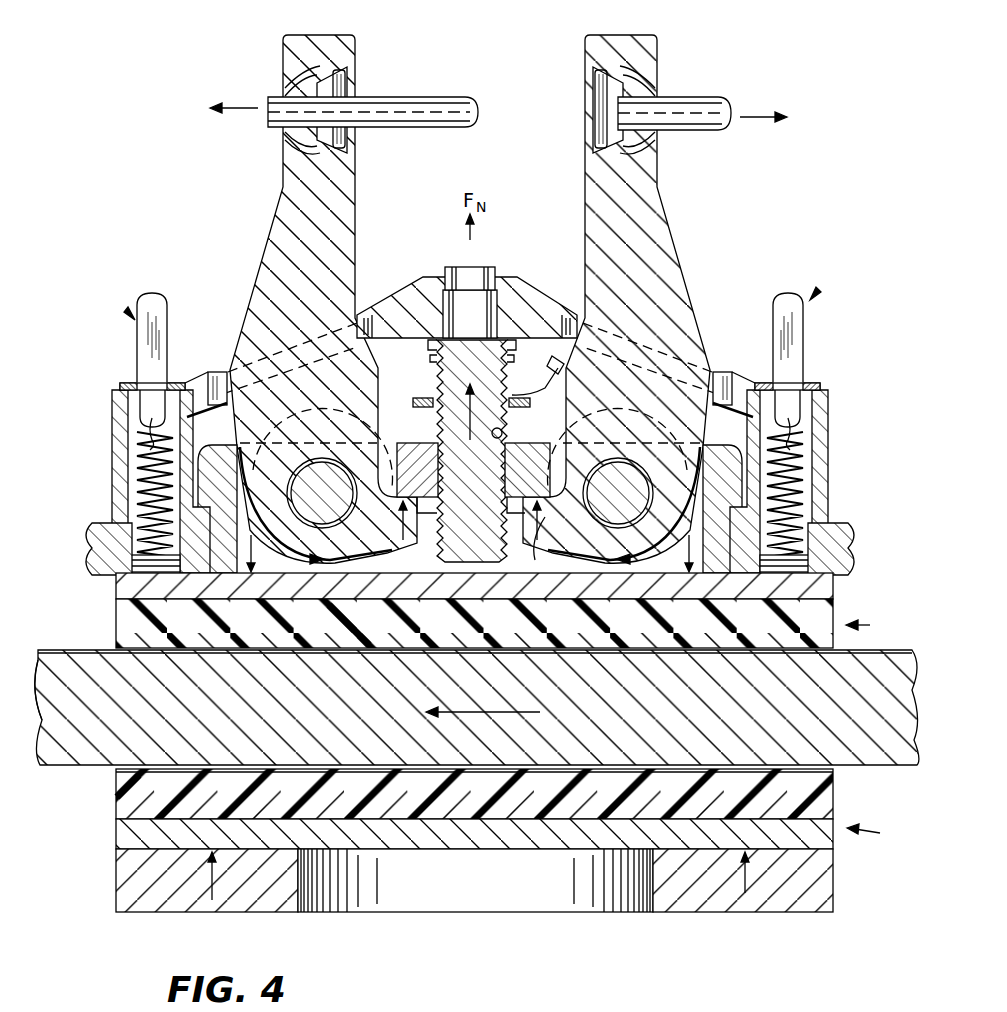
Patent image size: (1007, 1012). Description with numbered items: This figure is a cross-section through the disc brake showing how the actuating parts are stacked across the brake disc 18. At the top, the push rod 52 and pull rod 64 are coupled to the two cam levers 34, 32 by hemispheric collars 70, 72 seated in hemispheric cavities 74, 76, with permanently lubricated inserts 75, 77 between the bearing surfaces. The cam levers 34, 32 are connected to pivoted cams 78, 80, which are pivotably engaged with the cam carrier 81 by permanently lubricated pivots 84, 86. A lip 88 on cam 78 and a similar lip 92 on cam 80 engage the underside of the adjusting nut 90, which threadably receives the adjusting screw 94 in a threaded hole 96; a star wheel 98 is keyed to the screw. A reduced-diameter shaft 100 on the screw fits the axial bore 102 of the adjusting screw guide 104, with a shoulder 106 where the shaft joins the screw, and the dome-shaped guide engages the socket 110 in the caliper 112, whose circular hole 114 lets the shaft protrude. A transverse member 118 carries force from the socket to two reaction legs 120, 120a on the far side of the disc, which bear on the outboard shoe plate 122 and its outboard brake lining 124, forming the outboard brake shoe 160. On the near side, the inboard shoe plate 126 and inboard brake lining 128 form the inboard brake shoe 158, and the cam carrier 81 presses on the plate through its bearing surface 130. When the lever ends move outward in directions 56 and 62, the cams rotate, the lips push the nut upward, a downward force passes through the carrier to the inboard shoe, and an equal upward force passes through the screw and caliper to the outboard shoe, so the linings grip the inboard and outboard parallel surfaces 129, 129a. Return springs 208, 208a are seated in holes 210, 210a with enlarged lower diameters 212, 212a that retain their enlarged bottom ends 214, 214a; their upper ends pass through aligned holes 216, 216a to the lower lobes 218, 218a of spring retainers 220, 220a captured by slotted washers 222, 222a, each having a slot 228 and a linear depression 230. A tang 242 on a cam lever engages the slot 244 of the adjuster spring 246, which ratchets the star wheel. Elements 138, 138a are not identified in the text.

The brake disc 18 is at (70, 757).
The cam lever 32 is at (645, 175).
The cam lever 34 is at (293, 183).
The push rod 52 is at (447, 100).
The direction 56 is at (237, 107).
The direction 62 is at (763, 117).
The pull rod 64 is at (700, 97).
The hemispheric collar 70 is at (336, 93).
The hemispheric collar 72 is at (597, 107).
The hemispheric cavity 74 is at (318, 82).
The permanently lubricated insert 75 is at (333, 72).
The hemispheric cavity 76 is at (597, 70).
The permanently lubricated insert 77 is at (590, 72).
The pivoted cam 78 is at (262, 545).
The pivoted cam 80 is at (668, 540).
The cam carrier 81 is at (220, 483).
The permanently lubricated pivot 84 is at (310, 470).
The permanently lubricated pivot 86 is at (660, 473).
The lip 88 is at (422, 508).
The adjusting nut 90 is at (408, 447).
The lip 92 is at (507, 535).
The adjusting screw 94 is at (485, 489).
The threaded hole 96 is at (518, 437).
The star wheel 98 is at (413, 402).
The reduced-diameter shaft 100 is at (440, 270).
The axial bore 102 is at (507, 343).
The adjusting screw guide 104 is at (430, 345).
The shoulder 106 is at (435, 367).
The socket 110 is at (433, 323).
The caliper 112 is at (535, 305).
The circular hole 114 is at (460, 302).
The transverse member 118 is at (833, 513).
The reaction leg 120 is at (120, 890).
The reaction leg 120a is at (722, 912).
The outboard shoe plate 122 is at (498, 848).
The outboard brake lining 124 is at (838, 795).
The inboard shoe plate 126 is at (432, 598).
The inboard brake lining 128 is at (255, 655).
The inboard parallel surface 129 is at (340, 650).
The outboard parallel surface 129a is at (143, 775).
The bearing surface 130 is at (548, 517).
The left flange 138 is at (220, 372).
The right flange 138a is at (729, 380).
The inboard brake shoe 158 is at (512, 623).
The outboard brake shoe 160 is at (515, 834).
The return spring 208 is at (150, 476).
The return spring 208a is at (807, 452).
The hole 210 is at (130, 543).
The hole 210a is at (815, 540).
The enlarged lower diameter 212 is at (117, 570).
The enlarged lower diameter 212a is at (820, 561).
The bottom end 214 is at (125, 590).
The bottom end 214a is at (810, 577).
The aligned hole 216 is at (118, 427).
The aligned hole 216a is at (802, 403).
The lower lobe 218 is at (147, 403).
The lower lobe 218a is at (802, 398).
The spring retainer 220 is at (129, 312).
The spring retainer 220a is at (818, 294).
The slotted washer 222 is at (178, 380).
The slotted washer 222a is at (768, 381).
The slot 228 is at (143, 382).
The linear depression 230 is at (130, 383).
The tang 242 is at (550, 398).
The slot 244 is at (536, 396).
The adjuster spring 246 is at (570, 393).